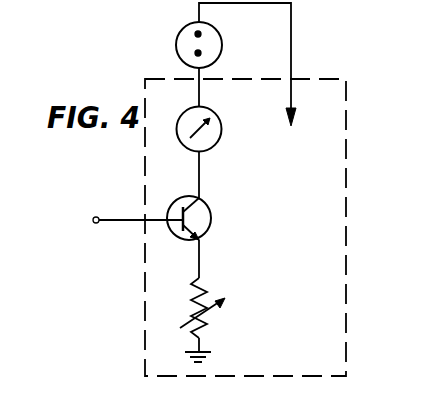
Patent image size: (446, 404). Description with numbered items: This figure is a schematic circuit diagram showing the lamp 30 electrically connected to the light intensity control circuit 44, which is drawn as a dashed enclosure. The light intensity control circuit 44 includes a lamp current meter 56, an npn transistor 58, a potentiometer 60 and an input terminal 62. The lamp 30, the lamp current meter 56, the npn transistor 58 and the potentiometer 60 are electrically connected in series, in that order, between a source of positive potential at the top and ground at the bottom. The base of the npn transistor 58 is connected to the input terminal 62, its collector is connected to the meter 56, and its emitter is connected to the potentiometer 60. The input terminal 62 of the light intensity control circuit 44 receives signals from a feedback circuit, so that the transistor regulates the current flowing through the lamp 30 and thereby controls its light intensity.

The lamp 30 is at (188, 33).
The light intensity control circuit 44 is at (318, 148).
The lamp current meter 56 is at (212, 140).
The npn transistor 58 is at (207, 213).
The potentiometer 60 is at (203, 315).
The input terminal 62 is at (96, 217).